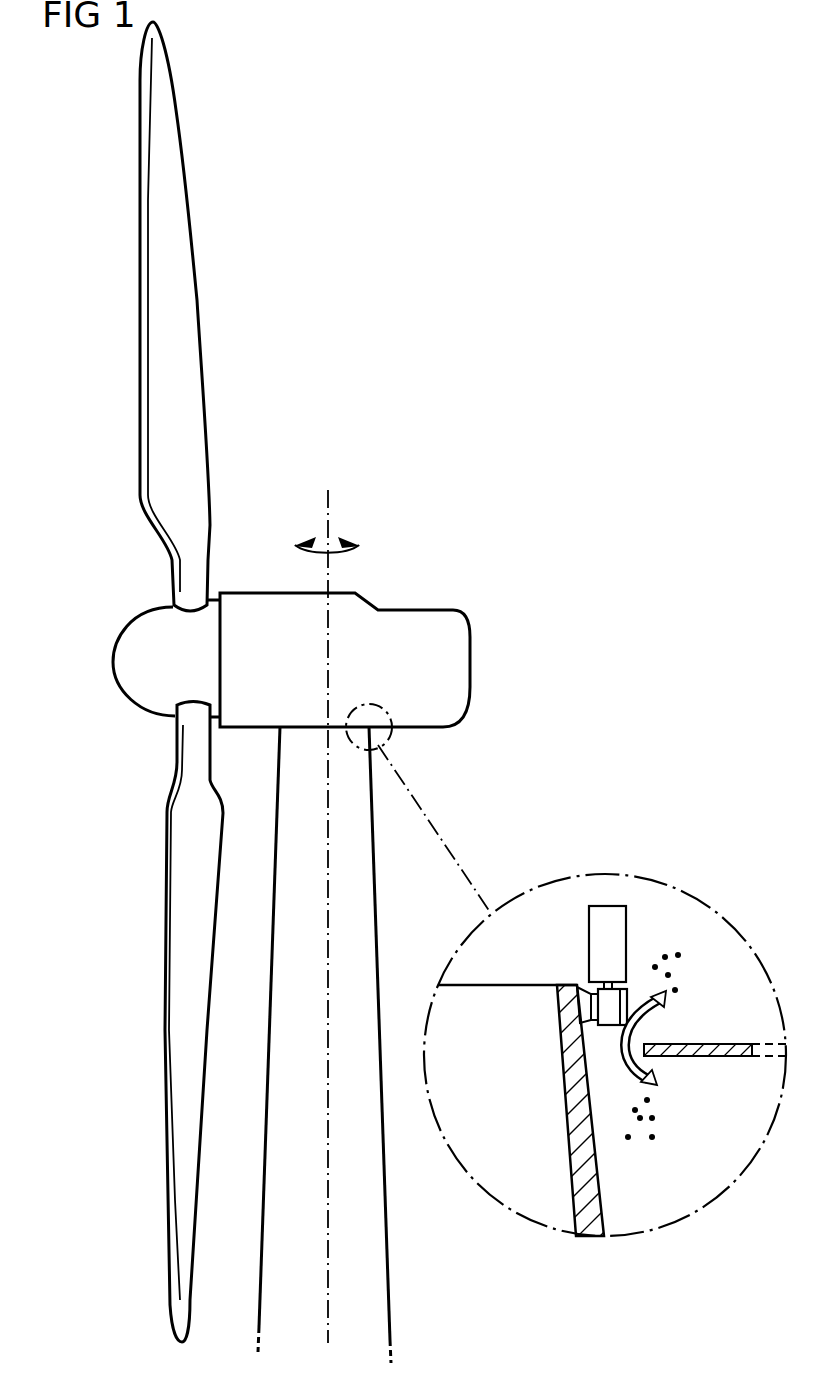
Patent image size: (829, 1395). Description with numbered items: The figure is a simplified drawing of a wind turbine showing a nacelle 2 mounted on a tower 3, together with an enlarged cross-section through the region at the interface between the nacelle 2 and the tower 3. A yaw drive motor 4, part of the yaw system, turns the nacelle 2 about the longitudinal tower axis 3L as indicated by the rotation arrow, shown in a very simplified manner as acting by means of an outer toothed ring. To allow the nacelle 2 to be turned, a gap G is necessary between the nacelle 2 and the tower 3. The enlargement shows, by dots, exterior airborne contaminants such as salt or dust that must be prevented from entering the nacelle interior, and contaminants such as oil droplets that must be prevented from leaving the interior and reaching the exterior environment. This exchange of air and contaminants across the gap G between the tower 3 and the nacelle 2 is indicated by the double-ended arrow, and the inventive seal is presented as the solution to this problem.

The nacelle 2 is at (425, 610).
The tower 3 is at (387, 1212).
The longitudinal tower axis 3L is at (333, 505).
The yaw drive motor 4 is at (612, 906).
The gap G is at (275, 733).